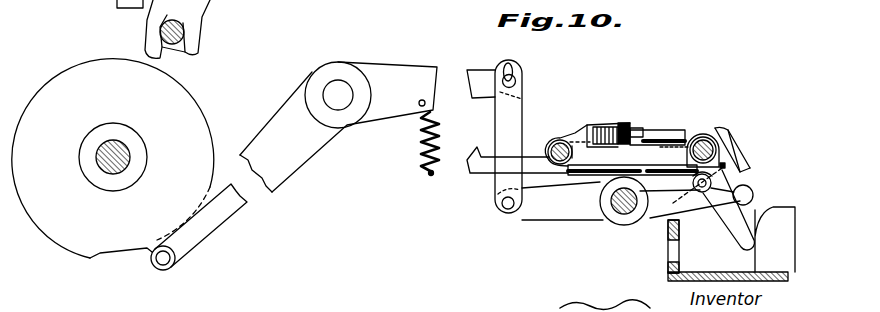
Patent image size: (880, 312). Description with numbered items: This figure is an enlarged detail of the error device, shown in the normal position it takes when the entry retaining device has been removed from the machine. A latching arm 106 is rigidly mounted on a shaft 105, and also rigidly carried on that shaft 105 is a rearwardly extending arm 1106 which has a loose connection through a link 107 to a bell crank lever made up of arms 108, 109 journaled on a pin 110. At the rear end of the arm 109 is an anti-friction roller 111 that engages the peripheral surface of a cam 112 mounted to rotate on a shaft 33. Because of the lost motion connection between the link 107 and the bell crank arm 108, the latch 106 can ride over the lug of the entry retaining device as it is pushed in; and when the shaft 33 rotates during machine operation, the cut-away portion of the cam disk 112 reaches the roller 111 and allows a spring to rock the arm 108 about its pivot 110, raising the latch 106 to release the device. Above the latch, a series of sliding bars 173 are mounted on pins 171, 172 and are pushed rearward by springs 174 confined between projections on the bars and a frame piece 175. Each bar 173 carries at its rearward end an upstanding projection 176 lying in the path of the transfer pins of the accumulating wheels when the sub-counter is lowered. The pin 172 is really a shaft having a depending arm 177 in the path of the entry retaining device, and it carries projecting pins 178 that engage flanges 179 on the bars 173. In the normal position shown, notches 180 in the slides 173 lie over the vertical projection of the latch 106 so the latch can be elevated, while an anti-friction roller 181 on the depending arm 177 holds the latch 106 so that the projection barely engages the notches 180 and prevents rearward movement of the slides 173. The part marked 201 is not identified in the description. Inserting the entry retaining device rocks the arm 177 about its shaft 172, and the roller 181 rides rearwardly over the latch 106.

The bracket 201 is at (112, 2).
The shaft 33 is at (126, 147).
The cam 112 is at (113, 158).
The anti-friction roller 111 is at (163, 270).
The bell crank arm 108 is at (360, 95).
The pin 110 is at (337, 98).
The bell crank arm 109 is at (287, 167).
The upstanding projections 176 is at (470, 152).
The link 107 is at (512, 98).
The pin 171 is at (558, 140).
The springs 174 is at (607, 125).
The frame piece 175 is at (623, 125).
The sliding bars 173 is at (632, 162).
The pin 172 is at (699, 135).
The projecting pins 178 is at (712, 130).
The flanges 179 is at (735, 146).
The notches 180 is at (722, 165).
The latching arm 106 is at (717, 188).
The rearwardly extending arm 1106 is at (527, 217).
The shaft 105 is at (612, 207).
The anti-friction roller 181 is at (693, 190).
The depending arm 177 is at (740, 245).